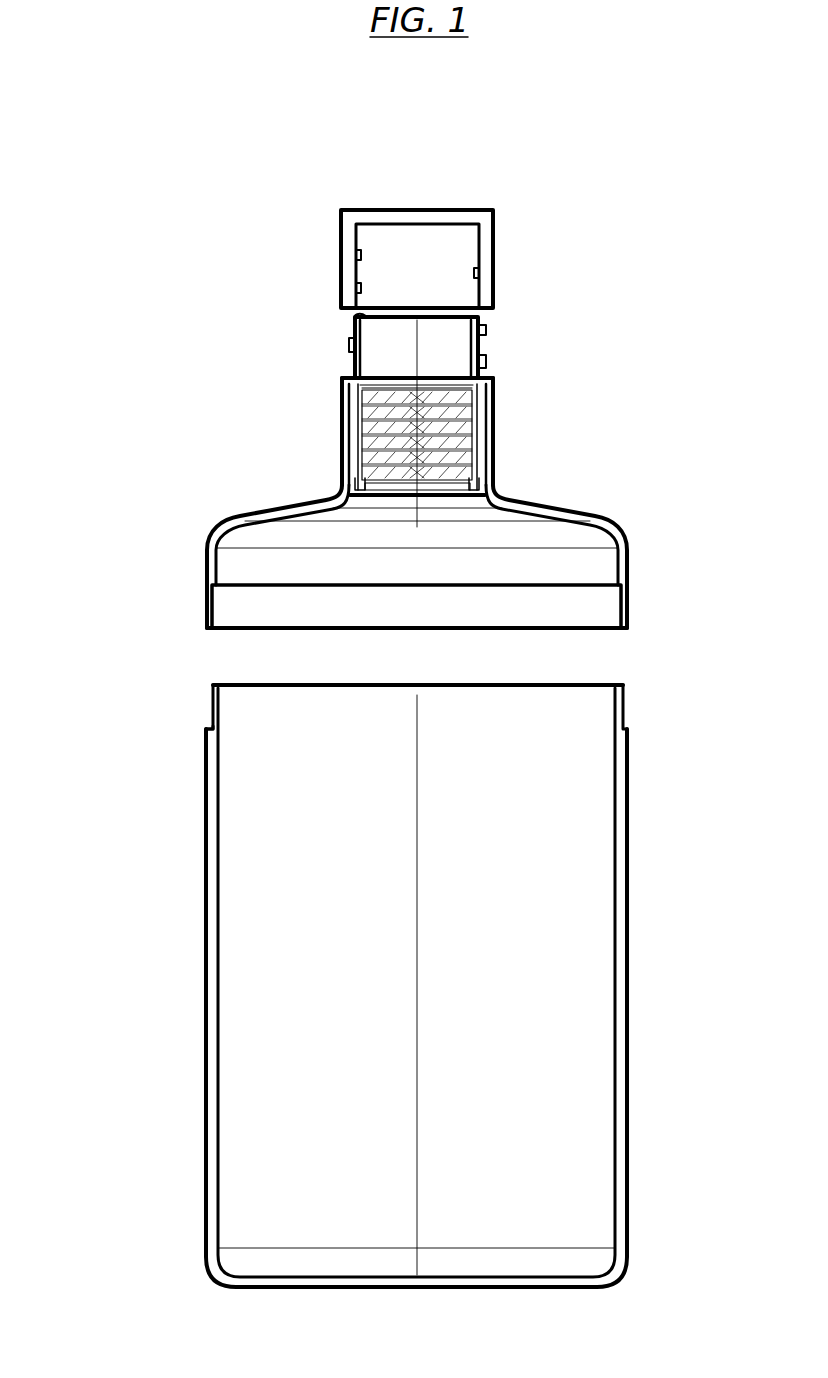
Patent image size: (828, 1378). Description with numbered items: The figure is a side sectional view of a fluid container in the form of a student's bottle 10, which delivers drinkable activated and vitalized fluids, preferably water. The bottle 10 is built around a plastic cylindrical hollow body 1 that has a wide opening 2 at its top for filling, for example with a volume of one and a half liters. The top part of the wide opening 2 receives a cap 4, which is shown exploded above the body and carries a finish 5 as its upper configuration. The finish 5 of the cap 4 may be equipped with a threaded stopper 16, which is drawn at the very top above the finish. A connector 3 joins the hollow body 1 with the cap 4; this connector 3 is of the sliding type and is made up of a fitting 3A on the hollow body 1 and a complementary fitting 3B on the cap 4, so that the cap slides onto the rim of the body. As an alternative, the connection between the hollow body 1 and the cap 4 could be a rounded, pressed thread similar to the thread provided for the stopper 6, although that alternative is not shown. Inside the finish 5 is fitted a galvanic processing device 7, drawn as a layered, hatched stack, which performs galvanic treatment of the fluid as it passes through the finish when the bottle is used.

The bottle 10 is at (222, 463).
The threaded stopper 16 is at (494, 252).
The finish 5 is at (480, 345).
The stopper 6 is at (355, 318).
The galvanic processing device 7 is at (463, 440).
The cap 4 is at (612, 520).
The complementary fitting 3B is at (212, 612).
The hollow body 1 is at (628, 820).
The wide opening 2 is at (618, 685).
The connector 3 is at (623, 711).
The fitting 3A is at (213, 716).